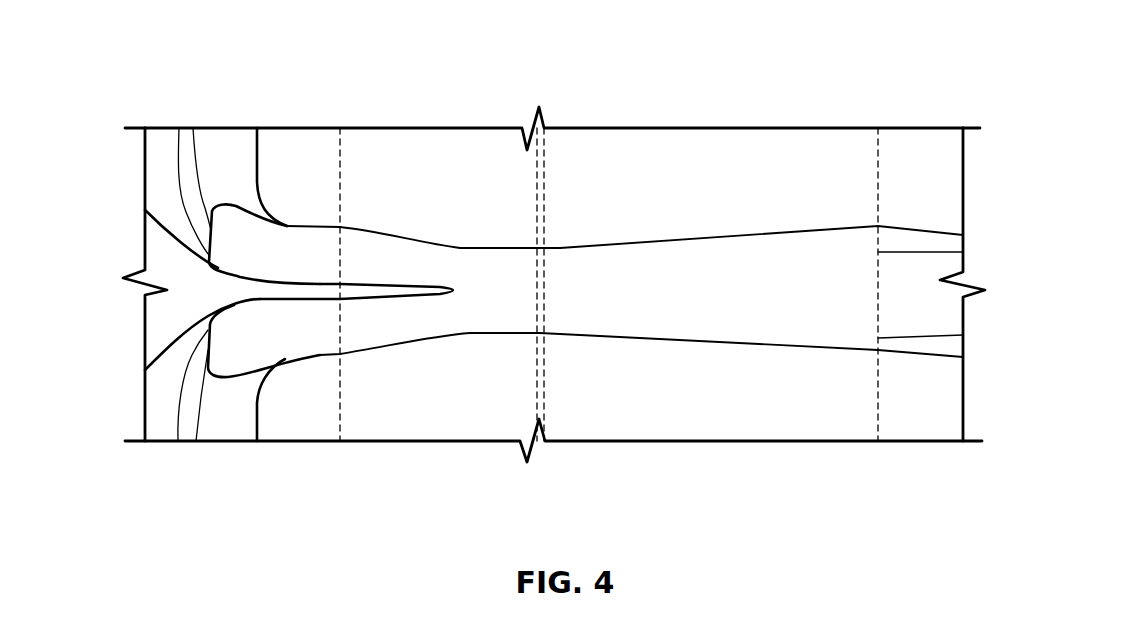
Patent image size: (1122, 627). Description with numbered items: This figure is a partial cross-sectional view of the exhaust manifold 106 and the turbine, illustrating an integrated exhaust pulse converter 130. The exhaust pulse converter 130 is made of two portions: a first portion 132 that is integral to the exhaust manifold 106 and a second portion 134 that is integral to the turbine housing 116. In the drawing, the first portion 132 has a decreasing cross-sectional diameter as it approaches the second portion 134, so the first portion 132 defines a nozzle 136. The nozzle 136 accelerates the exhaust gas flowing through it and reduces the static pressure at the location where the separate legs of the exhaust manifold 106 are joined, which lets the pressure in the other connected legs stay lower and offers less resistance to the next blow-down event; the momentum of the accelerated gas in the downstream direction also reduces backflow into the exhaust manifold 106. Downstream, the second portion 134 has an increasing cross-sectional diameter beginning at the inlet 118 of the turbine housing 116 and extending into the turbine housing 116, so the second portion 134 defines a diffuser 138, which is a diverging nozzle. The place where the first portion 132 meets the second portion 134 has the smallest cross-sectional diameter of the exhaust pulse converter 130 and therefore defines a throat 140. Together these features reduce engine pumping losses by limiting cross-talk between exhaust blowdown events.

The exhaust manifold 106 is at (180, 171).
The turbine housing 116 is at (918, 150).
The inlet 118 is at (537, 317).
The exhaust pulse converter 130 is at (340, 100).
The first portion 132 is at (537, 470).
The second portion 134 is at (543, 470).
The nozzle 136 is at (503, 270).
The diffuser 138 is at (612, 270).
The throat 140 is at (545, 287).